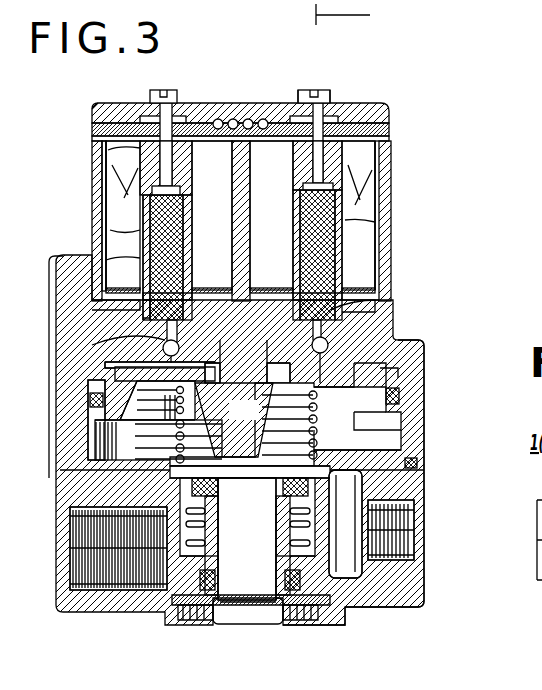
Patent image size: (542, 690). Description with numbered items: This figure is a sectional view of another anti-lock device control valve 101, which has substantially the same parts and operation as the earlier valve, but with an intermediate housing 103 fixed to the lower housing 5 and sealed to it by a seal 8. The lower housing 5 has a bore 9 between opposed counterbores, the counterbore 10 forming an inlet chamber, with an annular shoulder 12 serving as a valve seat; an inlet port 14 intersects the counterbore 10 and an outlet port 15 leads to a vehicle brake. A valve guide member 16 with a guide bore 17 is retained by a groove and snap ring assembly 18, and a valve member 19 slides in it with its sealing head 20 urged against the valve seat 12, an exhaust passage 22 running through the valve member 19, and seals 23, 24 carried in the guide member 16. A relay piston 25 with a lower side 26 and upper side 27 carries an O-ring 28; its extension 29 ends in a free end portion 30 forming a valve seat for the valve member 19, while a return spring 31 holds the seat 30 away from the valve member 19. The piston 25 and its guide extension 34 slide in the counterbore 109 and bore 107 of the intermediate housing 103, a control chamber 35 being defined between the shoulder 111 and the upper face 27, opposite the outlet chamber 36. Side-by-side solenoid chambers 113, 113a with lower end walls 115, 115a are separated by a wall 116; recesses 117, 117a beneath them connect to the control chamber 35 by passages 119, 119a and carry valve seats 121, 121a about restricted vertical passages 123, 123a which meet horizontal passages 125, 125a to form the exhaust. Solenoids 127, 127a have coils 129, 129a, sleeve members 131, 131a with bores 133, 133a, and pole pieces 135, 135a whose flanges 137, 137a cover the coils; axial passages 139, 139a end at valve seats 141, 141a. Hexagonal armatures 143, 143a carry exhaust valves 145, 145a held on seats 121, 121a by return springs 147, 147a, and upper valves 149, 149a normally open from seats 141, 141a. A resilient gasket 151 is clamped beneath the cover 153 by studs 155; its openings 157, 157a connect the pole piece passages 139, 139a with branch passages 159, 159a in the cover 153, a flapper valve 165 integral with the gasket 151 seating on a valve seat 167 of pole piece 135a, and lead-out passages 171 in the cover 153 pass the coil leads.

The lower housing 5 is at (444, 585).
The seal 8 is at (420, 462).
The bore 9 is at (283, 487).
The counterbore 10 is at (318, 515).
The annular shoulder 12 is at (180, 470).
The inlet port 14 is at (78, 580).
The outlet port 15 is at (400, 560).
The valve guide member 16 is at (350, 610).
The guide bore 17 is at (278, 603).
The groove and snap ring assembly 18 is at (310, 614).
The valve member 19 is at (251, 541).
The sealing head 20 is at (275, 495).
The exhaust passage 22 is at (290, 525).
The seal 23 is at (178, 598).
The seal 24 is at (215, 580).
The relay piston 25 is at (82, 425).
The lower side 26 is at (143, 394).
The upper side 27 is at (157, 411).
The O-ring 28 is at (90, 400).
The extension 29 is at (234, 420).
The free end portion 30 is at (180, 430).
The return spring 31 is at (313, 437).
The guide extension 34 is at (247, 361).
The control chamber 35 is at (400, 375).
The outlet chamber 36 is at (401, 420).
The control valve 101 is at (38, 264).
The intermediate housing 103 is at (52, 315).
The bore 107 is at (383, 396).
The counterbore 109 is at (401, 440).
The shoulder 111 is at (140, 355).
The solenoid chamber 113 is at (395, 190).
The solenoid chamber 113a is at (132, 200).
The lower end wall 115 is at (372, 302).
The lower end wall 115a is at (110, 308).
The wall 116 is at (243, 218).
The recess 117 is at (365, 316).
The recess 117a is at (140, 330).
The passage 119 is at (372, 330).
The passage 119a is at (160, 350).
The valve seat 121 is at (290, 285).
The valve seat 121a is at (232, 288).
The vertically extending passage 123 is at (345, 342).
The vertically extending passage 123a is at (180, 348).
The horizontally extending passage 125 is at (378, 365).
The horizontally extending passage 125a is at (100, 378).
The solenoid 127 is at (392, 165).
The solenoid 127a is at (100, 152).
The electrical coil 129 is at (372, 222).
The electrical coil 129a is at (140, 200).
The sleeve member 131 is at (340, 176).
The sleeve member 131a is at (110, 160).
The sleeve bore 133 is at (340, 200).
The sleeve bore 133a is at (125, 205).
The pole piece 135 is at (298, 155).
The pole piece 135a is at (180, 158).
The flange 137 is at (386, 112).
The flange 137a is at (138, 135).
The axial passage 139 is at (300, 178).
The axial passage 139a is at (170, 176).
The valve seat 141 is at (302, 192).
The valve seat 141a is at (178, 196).
The armature 143 is at (297, 226).
The armature 143a is at (148, 240).
The exhaust valve 145 is at (300, 242).
The exhaust valve 145a is at (160, 275).
The return spring 147 is at (377, 282).
The return spring 147a is at (245, 270).
The valve 149 is at (355, 200).
The valve 149a is at (145, 220).
The gasket 151 is at (282, 125).
The cover 153 is at (93, 105).
The studs 155 is at (176, 133).
The opening 157 is at (318, 90).
The opening 157a is at (160, 103).
The branch passage 159 is at (333, 118).
The branch passage 159a is at (180, 120).
The flapper valve 165 is at (178, 125).
The valve seat 167 is at (174, 124).
The lead-out passages 171 is at (270, 122).